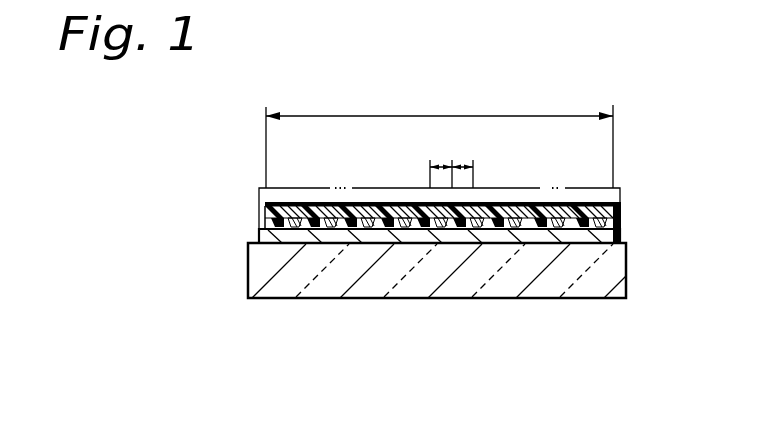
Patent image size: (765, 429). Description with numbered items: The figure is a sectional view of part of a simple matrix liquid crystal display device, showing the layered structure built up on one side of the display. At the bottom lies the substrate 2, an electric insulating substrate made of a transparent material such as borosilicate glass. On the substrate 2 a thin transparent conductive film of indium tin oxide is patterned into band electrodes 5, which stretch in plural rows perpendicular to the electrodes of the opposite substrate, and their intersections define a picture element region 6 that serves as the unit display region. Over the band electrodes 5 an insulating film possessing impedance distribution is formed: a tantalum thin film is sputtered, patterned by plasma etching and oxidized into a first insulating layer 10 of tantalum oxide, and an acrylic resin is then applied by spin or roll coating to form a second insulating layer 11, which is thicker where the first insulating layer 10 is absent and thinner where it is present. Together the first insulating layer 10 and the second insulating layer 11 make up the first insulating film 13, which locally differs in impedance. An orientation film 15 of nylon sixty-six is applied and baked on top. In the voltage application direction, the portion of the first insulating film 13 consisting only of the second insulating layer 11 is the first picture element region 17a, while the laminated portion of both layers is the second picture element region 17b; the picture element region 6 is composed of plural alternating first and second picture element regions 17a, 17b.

The substrate 2 is at (618, 268).
The band electrodes 5 is at (603, 238).
The picture element region 6 is at (443, 116).
The first insulating layer 10 is at (542, 210).
The second insulating layer 11 is at (530, 205).
The first insulating film 13 is at (443, 302).
The orientation film 15 is at (353, 188).
The first picture element region 17a is at (440, 165).
The second picture element region 17b is at (463, 165).